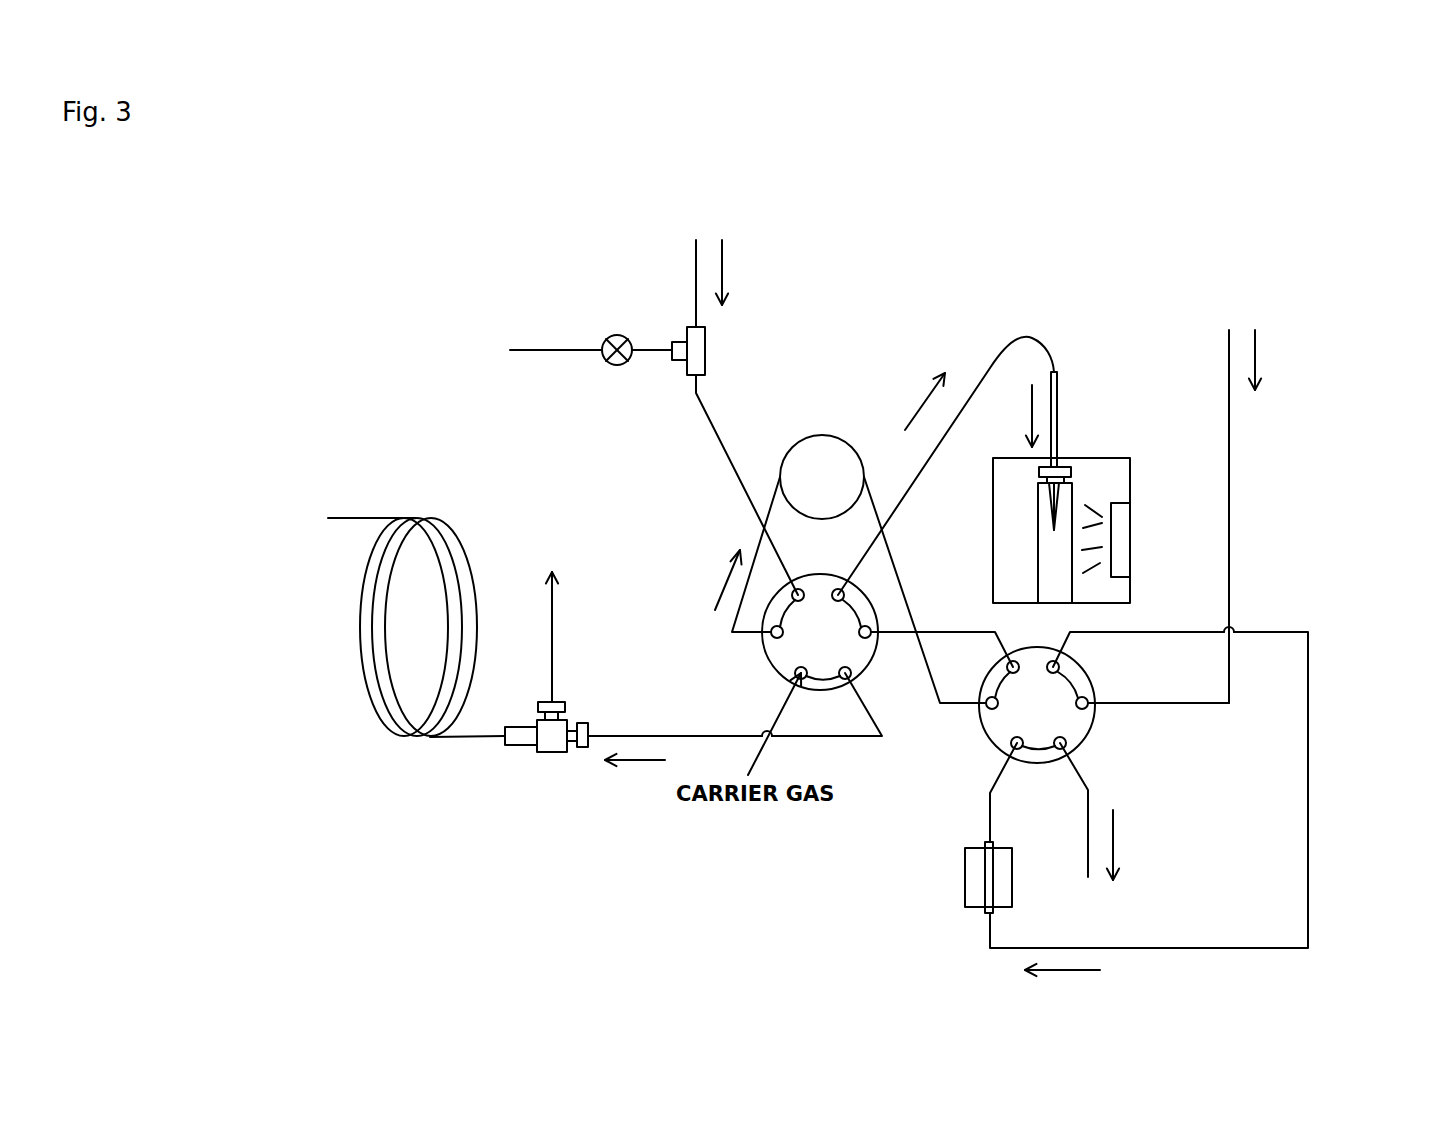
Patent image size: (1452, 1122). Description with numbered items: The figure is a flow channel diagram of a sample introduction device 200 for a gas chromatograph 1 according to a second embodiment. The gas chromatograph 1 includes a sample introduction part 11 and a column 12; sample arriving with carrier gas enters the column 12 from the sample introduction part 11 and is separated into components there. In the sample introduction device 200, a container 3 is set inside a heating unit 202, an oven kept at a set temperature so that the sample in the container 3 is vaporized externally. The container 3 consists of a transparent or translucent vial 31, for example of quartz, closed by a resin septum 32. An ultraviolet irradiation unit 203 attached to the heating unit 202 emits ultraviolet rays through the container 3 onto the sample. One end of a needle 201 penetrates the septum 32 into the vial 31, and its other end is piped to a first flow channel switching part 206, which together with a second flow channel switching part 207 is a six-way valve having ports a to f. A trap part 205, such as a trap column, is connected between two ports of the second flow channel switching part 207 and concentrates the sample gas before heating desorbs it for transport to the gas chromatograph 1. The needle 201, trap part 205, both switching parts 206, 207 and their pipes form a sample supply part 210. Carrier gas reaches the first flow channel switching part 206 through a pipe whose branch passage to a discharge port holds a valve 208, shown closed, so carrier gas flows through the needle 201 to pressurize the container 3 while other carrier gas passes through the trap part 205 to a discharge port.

The gas chromatograph 1 is at (472, 792).
The sample introduction part 11 is at (555, 752).
The column 12 is at (415, 518).
The sample introduction device 200 is at (992, 258).
The needle 201 is at (1058, 388).
The heating unit 202 is at (1107, 458).
The ultraviolet irradiation unit 203 is at (1130, 537).
The trap part 205 is at (965, 870).
The first flow channel switching part 206 is at (768, 660).
The second flow channel switching part 207 is at (1090, 733).
The valve 208 is at (615, 365).
The sample supply part 210 is at (788, 853).
The container 3 is at (1035, 530).
The vial 31 is at (1043, 565).
The septum 32 is at (1043, 473).